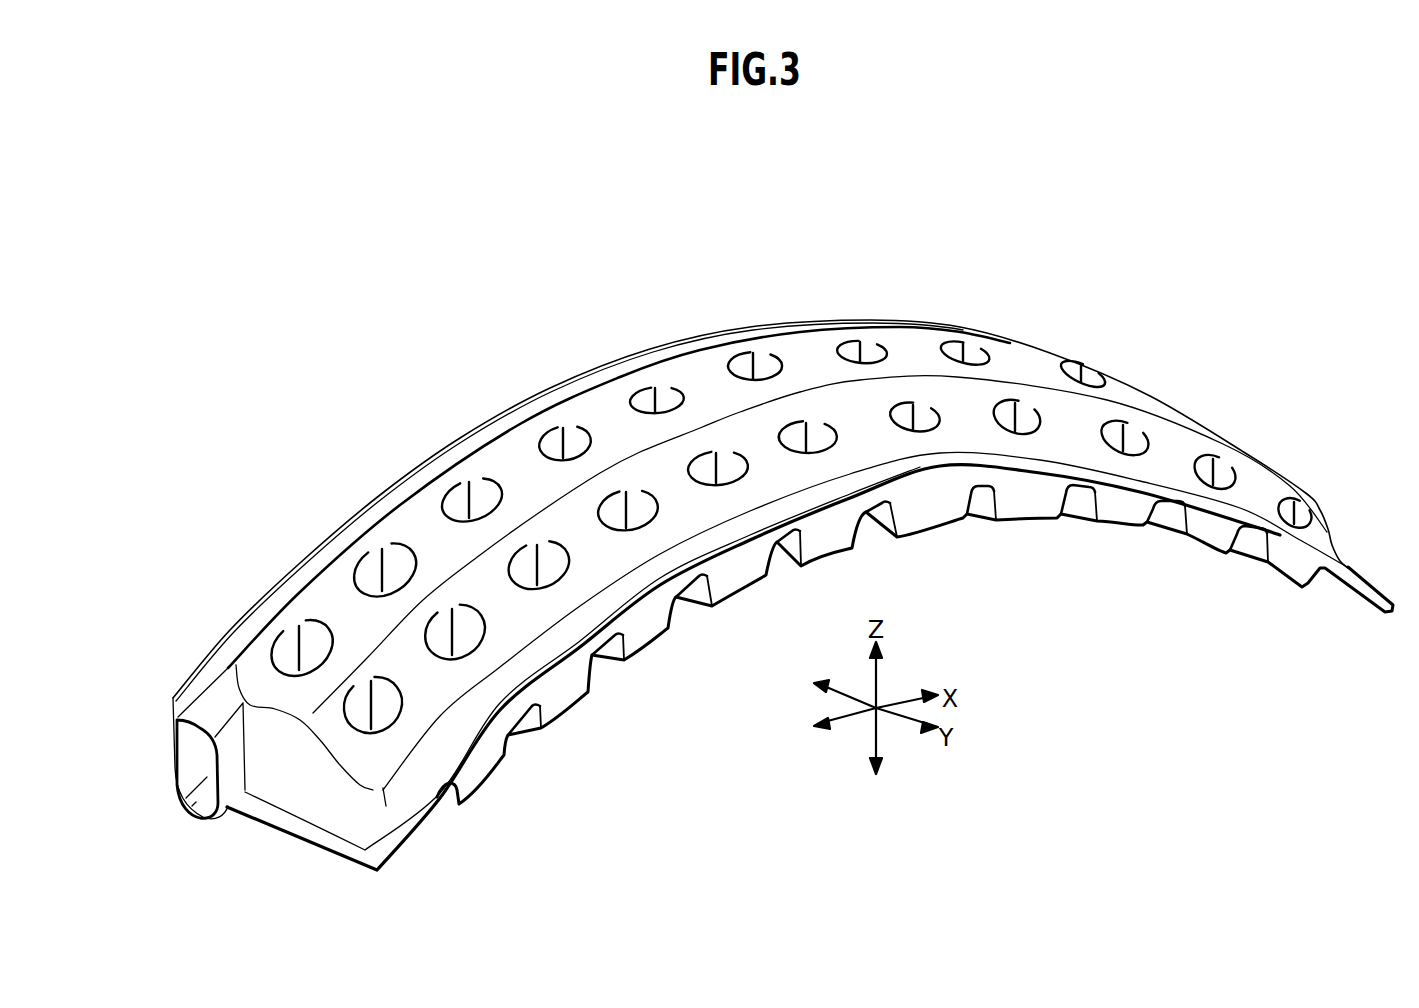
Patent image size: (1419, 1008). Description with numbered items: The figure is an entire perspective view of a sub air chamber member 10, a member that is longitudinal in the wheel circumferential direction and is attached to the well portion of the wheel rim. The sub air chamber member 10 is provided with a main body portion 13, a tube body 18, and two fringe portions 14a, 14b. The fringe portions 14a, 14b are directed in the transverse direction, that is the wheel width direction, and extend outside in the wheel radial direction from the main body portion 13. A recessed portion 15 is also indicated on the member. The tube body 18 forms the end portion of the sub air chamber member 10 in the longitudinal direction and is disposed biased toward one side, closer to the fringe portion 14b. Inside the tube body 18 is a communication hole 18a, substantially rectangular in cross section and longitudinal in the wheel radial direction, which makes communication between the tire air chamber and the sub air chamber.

The sub air chamber member 10 is at (994, 297).
The main body portion 13 is at (608, 417).
The fringe portion 14a is at (413, 813).
The fringe portion 14b is at (403, 497).
The recessed portion 15 is at (750, 440).
The tube body 18 is at (213, 712).
The communication hole 18a is at (188, 750).